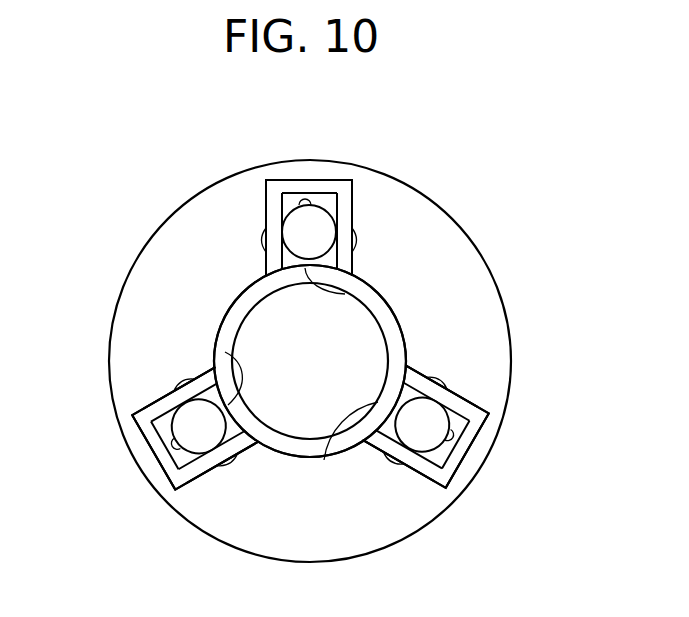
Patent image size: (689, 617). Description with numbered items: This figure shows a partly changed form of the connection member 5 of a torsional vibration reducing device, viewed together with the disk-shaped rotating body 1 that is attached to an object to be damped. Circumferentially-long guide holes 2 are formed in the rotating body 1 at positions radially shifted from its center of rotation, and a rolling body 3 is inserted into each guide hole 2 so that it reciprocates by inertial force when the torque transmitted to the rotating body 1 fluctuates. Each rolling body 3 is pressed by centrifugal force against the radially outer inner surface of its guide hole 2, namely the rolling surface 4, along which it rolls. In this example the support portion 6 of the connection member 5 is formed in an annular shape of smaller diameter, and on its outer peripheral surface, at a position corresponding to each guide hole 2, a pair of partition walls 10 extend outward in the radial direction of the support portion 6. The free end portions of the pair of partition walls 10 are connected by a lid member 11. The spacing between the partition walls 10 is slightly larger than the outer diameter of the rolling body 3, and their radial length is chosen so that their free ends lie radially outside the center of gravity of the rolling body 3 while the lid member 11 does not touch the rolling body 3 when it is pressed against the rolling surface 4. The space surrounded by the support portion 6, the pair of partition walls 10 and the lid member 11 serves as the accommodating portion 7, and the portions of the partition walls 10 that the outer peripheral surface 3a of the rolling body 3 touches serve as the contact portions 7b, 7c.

The rotating body 1 is at (474, 246).
The guide hole 2 is at (281, 257).
The rolling body 3 is at (318, 218).
The outer peripheral surface 3a is at (345, 294).
The rolling surface 4 is at (297, 200).
The connection member 5 is at (549, 300).
The support portion 6 is at (393, 328).
The accommodating portion 7 is at (360, 202).
The contact portion 7b is at (353, 252).
The contact portion 7c is at (300, 204).
The partition wall 10 is at (263, 256).
The lid member 11 is at (350, 180).